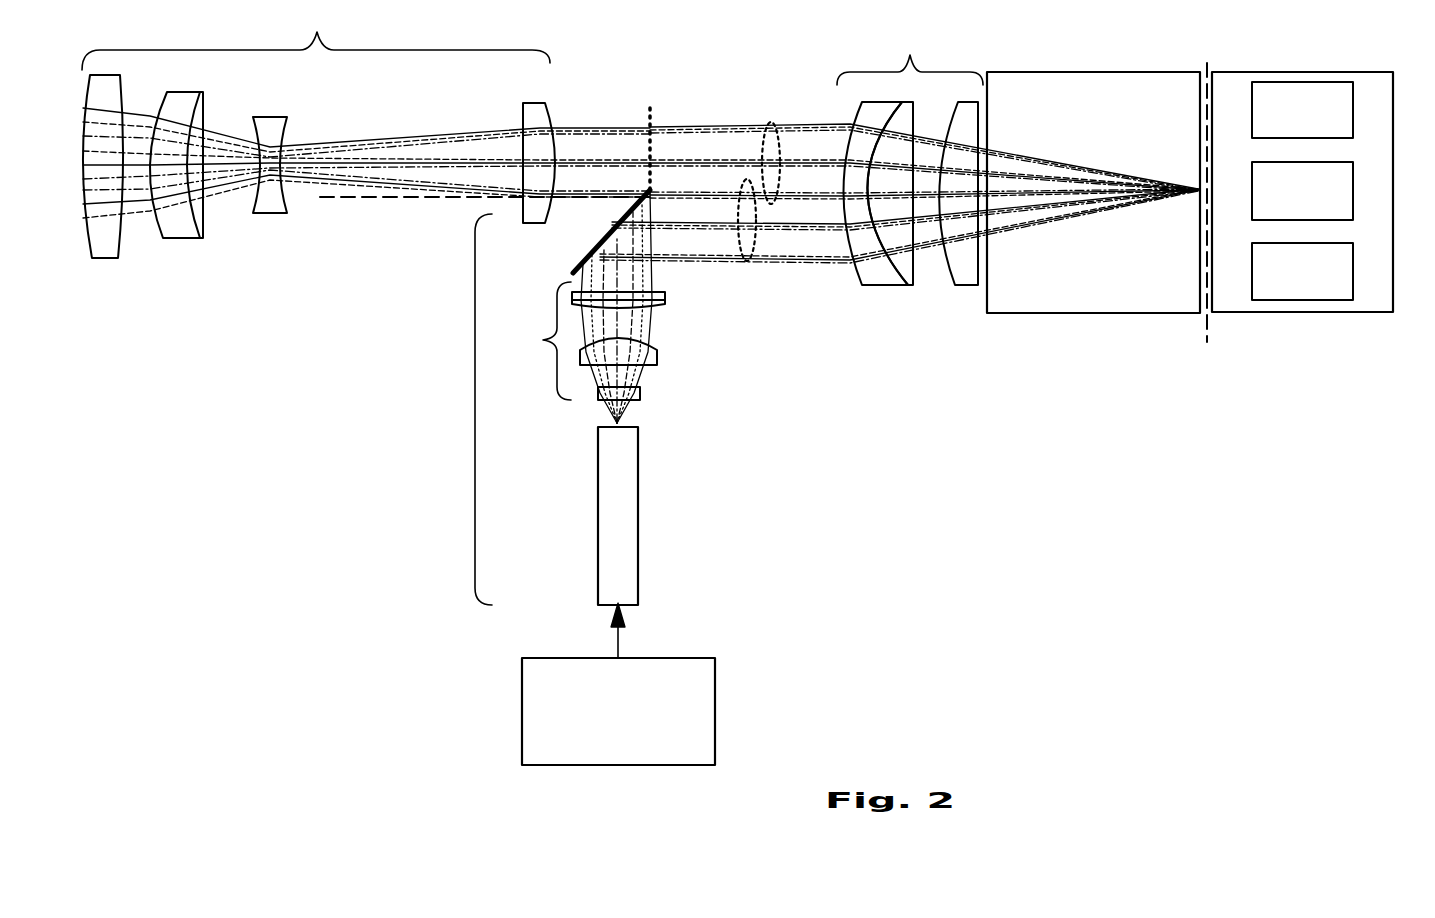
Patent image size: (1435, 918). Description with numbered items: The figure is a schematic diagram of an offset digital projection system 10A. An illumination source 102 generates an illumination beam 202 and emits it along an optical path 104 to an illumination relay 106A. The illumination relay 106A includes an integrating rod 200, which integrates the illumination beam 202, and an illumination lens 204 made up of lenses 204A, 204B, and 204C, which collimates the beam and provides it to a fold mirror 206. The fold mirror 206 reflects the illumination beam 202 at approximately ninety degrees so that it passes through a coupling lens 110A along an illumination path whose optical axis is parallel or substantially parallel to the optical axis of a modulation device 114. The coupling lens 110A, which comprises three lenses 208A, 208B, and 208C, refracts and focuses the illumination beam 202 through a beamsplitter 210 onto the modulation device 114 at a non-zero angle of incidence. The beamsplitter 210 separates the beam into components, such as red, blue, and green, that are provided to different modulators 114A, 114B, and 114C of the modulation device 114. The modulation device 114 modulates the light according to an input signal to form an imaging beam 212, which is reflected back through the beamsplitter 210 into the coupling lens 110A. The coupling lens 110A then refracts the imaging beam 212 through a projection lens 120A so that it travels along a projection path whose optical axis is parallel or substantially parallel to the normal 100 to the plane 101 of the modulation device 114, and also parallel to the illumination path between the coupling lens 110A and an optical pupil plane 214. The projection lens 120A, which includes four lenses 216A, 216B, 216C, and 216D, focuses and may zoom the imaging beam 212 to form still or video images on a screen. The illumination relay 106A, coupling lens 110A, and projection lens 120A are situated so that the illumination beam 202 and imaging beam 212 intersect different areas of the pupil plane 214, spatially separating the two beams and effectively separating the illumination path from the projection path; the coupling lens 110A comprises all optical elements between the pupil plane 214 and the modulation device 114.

The offset digital projection system 10A is at (258, 607).
The normal 100 is at (400, 199).
The plane 101 is at (1207, 332).
The illumination source 102 is at (716, 718).
The optical path 104 is at (619, 643).
The illumination relay 106A is at (475, 415).
The coupling lens 110A is at (910, 53).
The modulation device 114 is at (1328, 313).
The modulator 114A is at (1302, 110).
The modulator 114B is at (1302, 191).
The modulator 114C is at (1302, 271).
The projection lens 120A is at (316, 39).
The integrating rod 200 is at (639, 549).
The illumination beam 202 is at (748, 263).
The illumination lens 204 is at (532, 341).
The lens 204A is at (640, 394).
The lens 204B is at (657, 358).
The lens 204C is at (665, 300).
The fold mirror 206 is at (594, 252).
The lens 208A is at (878, 271).
The lens 208B is at (908, 272).
The lens 208C is at (965, 288).
The beamsplitter 210 is at (1103, 314).
The imaging beam 212 is at (772, 120).
The optical pupil plane 214 is at (652, 122).
The lens 216A is at (540, 108).
The lens 216B is at (272, 203).
The lens 216C is at (178, 222).
The lens 216D is at (104, 246).